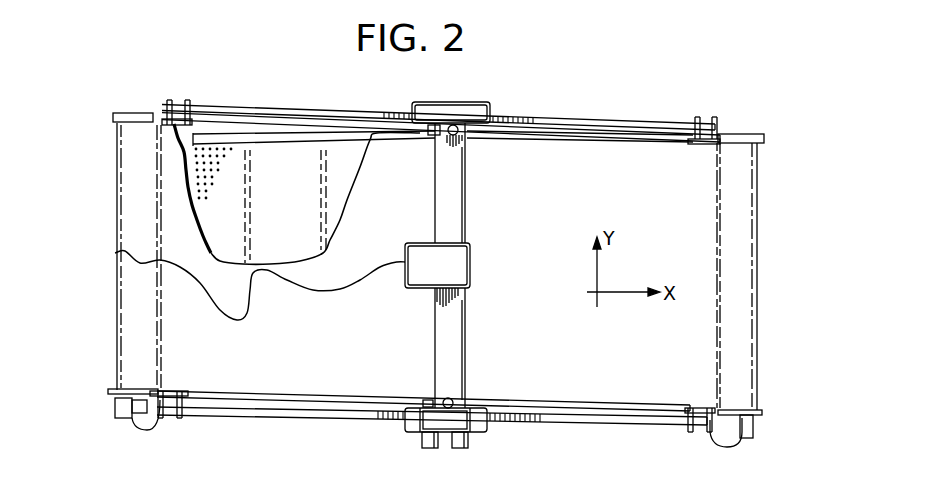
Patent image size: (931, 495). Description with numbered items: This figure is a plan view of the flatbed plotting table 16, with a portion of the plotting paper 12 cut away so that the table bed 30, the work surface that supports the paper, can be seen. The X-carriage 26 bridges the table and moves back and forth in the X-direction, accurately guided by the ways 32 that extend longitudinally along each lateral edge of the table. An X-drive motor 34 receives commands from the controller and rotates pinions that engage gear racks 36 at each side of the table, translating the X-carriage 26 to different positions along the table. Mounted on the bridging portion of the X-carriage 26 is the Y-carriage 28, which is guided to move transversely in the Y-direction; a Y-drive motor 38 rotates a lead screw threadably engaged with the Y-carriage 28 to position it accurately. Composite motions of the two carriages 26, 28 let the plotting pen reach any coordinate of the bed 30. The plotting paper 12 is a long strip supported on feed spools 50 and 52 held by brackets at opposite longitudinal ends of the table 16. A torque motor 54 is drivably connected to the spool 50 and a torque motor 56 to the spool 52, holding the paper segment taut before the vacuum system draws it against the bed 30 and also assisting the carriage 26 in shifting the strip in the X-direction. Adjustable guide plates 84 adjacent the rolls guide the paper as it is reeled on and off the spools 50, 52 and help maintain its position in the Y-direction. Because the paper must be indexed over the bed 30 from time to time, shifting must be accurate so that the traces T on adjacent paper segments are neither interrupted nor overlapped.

The plotting paper 12 is at (355, 202).
The flatbed plotting table 16 is at (268, 104).
The X-carriage 26 is at (452, 333).
The Y-carriage 28 is at (456, 260).
The table bed 30 is at (297, 160).
The ways 32 is at (618, 128).
The X-drive motor 34 is at (460, 445).
The gear racks 36 is at (523, 118).
The Y-drive motor 38 is at (423, 441).
The feed spool 50 is at (110, 390).
The feed spool 52 is at (757, 404).
The torque motor 54 is at (118, 410).
The torque motor 56 is at (755, 431).
The adjustable guide plates 84 is at (164, 117).
The trace T is at (338, 292).